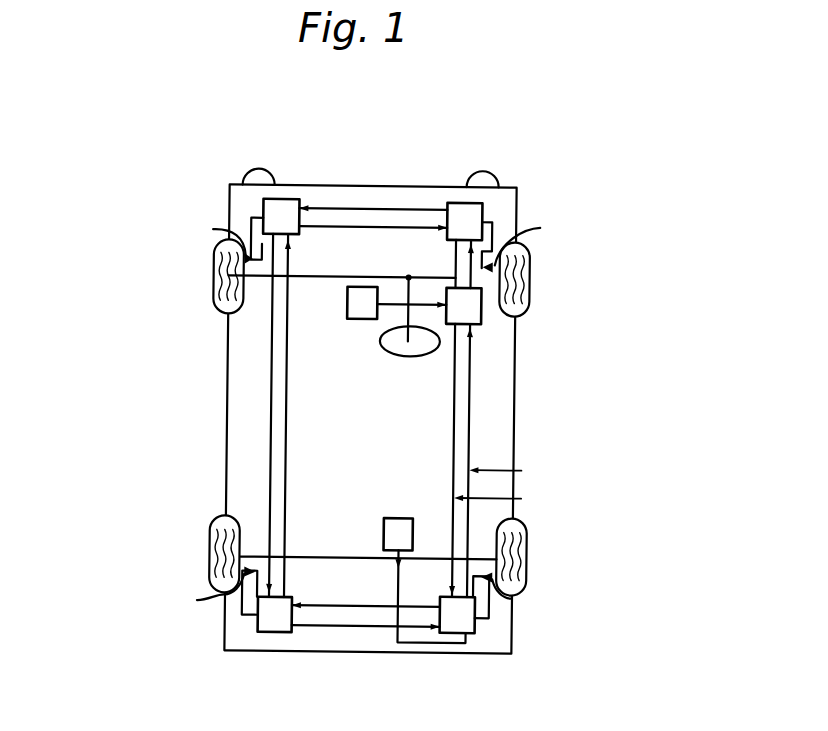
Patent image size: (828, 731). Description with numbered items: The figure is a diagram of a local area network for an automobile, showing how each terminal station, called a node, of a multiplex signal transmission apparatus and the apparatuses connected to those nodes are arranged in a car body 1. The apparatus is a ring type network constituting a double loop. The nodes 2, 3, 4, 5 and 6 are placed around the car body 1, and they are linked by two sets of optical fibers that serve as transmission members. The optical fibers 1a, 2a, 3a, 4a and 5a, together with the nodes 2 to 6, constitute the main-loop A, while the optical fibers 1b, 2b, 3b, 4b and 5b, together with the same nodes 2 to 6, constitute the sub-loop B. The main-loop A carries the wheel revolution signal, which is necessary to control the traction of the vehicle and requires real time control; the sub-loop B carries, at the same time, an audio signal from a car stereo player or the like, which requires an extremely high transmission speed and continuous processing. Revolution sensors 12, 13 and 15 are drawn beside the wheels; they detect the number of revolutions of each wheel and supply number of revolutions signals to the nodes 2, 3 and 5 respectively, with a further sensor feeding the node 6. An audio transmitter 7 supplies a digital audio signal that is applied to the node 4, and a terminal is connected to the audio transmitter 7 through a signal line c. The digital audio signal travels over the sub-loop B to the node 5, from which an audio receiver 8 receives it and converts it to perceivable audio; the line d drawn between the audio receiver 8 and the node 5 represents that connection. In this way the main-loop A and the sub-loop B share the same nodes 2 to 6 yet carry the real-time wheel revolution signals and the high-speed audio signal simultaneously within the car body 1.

The car body 1 is at (227, 407).
The optical fiber 1a is at (469, 391).
The optical fiber 1b is at (455, 433).
The node 2 is at (287, 200).
The optical fiber 2a is at (383, 628).
The optical fiber 2b is at (352, 608).
The node 3 is at (452, 202).
The optical fiber 3a is at (270, 476).
The optical fiber 3b is at (285, 431).
The node 4 is at (480, 322).
The optical fiber 4a is at (353, 209).
The optical fiber 4b is at (391, 227).
The node 5 is at (472, 646).
The optical fiber 5a is at (465, 252).
The optical fiber 5b is at (453, 275).
The node 6 is at (274, 634).
The audio transmitter 7 is at (346, 307).
The audio receiver 8 is at (414, 522).
The revolution sensor 12 is at (170, 222).
The revolution sensor 13 is at (524, 242).
The revolution sensor 15 is at (513, 597).
The main-loop A is at (522, 469).
The sub-loop B is at (522, 497).
The signal line c is at (389, 310).
The receiver signal line d is at (432, 644).